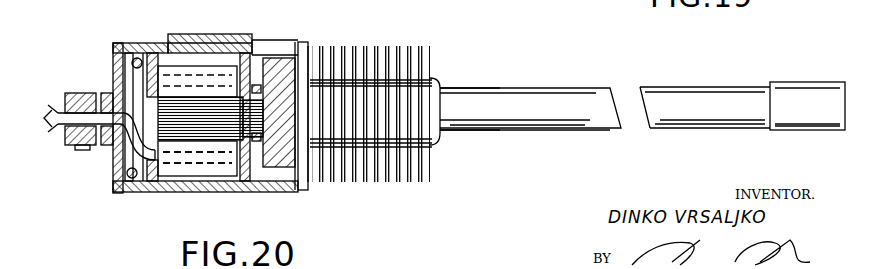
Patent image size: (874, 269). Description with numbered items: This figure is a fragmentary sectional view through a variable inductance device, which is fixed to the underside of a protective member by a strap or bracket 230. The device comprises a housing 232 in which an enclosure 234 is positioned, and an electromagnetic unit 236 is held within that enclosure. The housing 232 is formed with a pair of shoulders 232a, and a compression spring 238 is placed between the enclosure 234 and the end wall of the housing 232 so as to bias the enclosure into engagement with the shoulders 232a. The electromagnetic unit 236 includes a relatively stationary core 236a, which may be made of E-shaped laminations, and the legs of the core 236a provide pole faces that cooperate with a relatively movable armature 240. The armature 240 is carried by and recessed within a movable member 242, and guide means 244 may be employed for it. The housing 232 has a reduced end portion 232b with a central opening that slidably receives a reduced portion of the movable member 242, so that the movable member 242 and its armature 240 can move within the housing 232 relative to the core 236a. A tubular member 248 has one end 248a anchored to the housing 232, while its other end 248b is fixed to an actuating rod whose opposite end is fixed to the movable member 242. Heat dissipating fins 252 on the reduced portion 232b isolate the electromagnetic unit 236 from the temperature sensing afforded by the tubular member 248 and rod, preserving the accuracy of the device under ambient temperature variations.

The strap or bracket 230 is at (176, 34).
The housing 232 is at (288, 190).
The shoulders 232a is at (233, 47).
The reduced end portion 232b is at (403, 120).
The enclosure 234 is at (152, 186).
The electromagnetic unit 236 is at (214, 180).
The core 236a is at (180, 137).
The compression spring 238 is at (133, 158).
The armature 240 is at (268, 100).
The movable member 242 is at (294, 58).
The guide means 244 is at (258, 66).
The tubular member 248 is at (601, 117).
The one end of tubular member 248a is at (452, 95).
The other end of tubular member 248b is at (772, 124).
The heat dissipating fins 252 is at (412, 48).